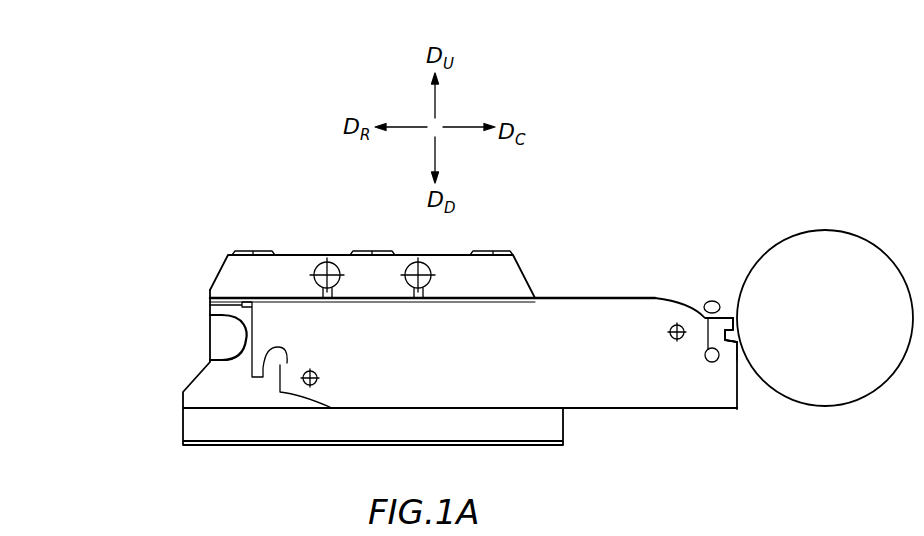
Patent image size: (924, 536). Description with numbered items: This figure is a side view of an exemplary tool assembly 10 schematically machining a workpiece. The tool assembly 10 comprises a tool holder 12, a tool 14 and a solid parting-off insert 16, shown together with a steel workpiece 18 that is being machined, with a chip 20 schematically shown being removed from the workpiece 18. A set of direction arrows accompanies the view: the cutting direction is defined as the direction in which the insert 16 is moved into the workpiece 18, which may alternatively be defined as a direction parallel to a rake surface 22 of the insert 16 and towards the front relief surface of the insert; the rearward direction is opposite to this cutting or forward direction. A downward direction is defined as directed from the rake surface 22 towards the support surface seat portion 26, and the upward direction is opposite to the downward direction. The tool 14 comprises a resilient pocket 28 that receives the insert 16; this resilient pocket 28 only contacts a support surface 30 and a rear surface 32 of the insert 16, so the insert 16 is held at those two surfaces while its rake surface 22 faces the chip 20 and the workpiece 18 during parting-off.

The tool assembly 10 is at (235, 220).
The tool holder 12 is at (515, 278).
The tool 14 is at (587, 317).
The solid parting-off insert 16 is at (712, 366).
The steel workpiece 18 is at (812, 240).
The chip 20 is at (712, 297).
The rake surface 22 is at (738, 317).
The support surface seat portion 26 is at (738, 340).
The resilient pocket 28 is at (731, 342).
The support surface 30 is at (731, 330).
The rear surface 32 is at (704, 331).